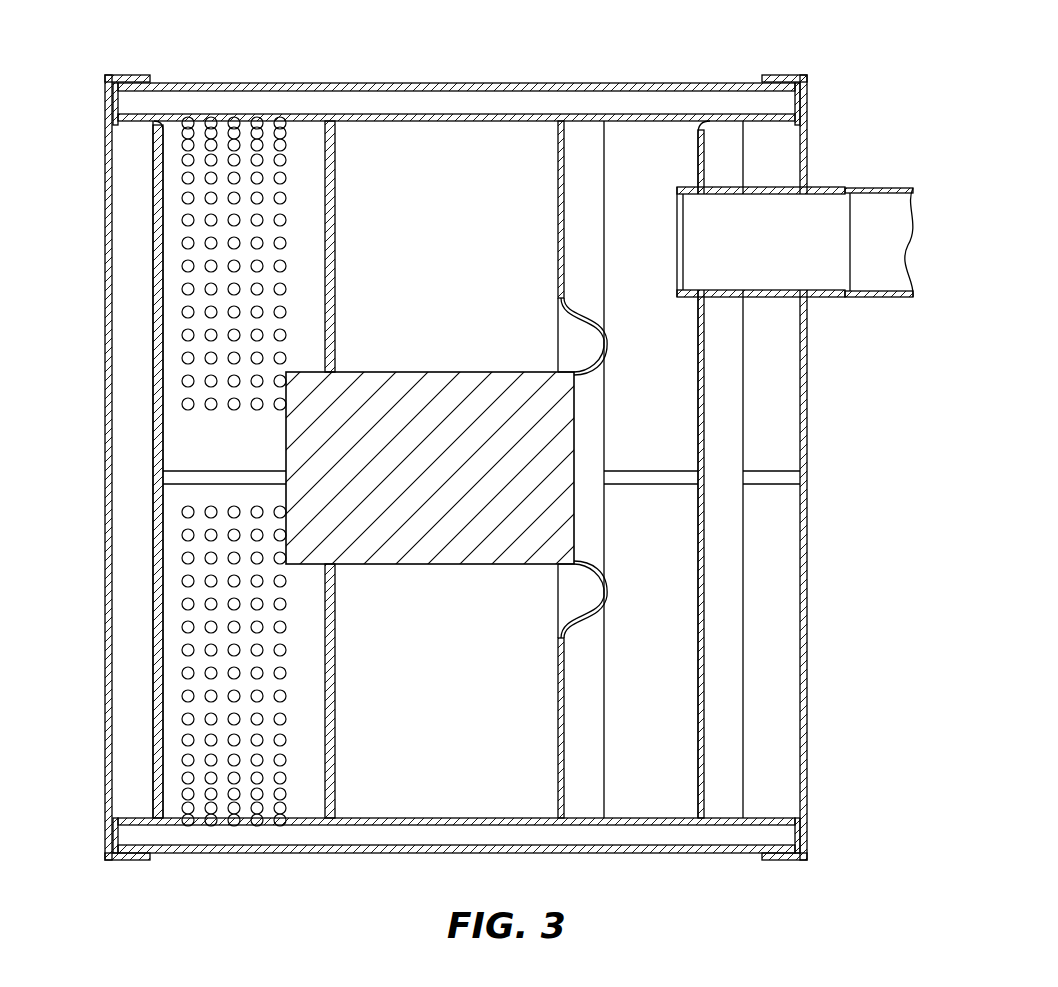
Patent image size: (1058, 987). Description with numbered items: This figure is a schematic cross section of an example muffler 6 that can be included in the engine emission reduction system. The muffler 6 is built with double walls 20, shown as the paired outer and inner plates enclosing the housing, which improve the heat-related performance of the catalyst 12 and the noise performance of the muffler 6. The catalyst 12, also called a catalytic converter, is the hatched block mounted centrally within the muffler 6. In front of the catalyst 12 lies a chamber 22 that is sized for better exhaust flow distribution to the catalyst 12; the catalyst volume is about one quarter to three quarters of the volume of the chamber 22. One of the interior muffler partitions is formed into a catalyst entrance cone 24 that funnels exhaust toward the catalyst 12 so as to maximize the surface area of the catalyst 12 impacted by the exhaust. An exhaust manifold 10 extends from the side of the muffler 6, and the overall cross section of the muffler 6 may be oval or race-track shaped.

The muffler 6 is at (572, 83).
The exhaust manifold 10 is at (870, 187).
The catalyst 12 is at (447, 371).
The double walls 20 is at (400, 114).
The chamber 22 is at (633, 158).
The catalyst entrance cone 24 is at (590, 373).